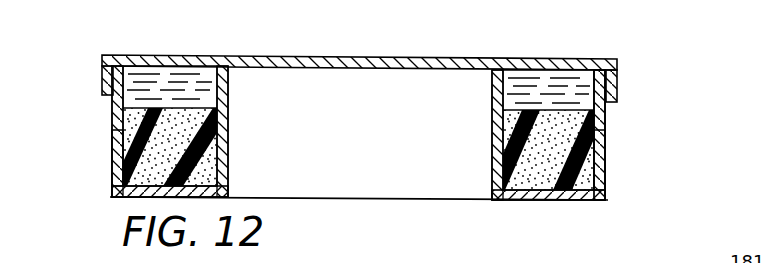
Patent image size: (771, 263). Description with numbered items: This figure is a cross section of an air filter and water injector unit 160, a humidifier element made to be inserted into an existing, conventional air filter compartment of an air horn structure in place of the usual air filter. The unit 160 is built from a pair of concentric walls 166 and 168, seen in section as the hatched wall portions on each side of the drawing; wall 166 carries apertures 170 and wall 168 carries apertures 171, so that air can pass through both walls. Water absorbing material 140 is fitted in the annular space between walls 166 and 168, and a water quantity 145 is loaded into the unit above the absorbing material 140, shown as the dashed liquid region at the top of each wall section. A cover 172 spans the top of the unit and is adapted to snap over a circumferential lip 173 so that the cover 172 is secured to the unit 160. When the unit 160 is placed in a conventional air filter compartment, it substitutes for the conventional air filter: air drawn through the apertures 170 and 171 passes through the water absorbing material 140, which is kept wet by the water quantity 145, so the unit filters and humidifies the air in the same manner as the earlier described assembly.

The water absorbing material 140 is at (130, 192).
The water quantity 145 is at (172, 78).
The air filter and water injector unit 160 is at (585, 204).
The outer concentric wall 166 is at (607, 112).
The inner concentric wall 168 is at (231, 86).
The apertures 170 is at (112, 145).
The apertures 171 is at (230, 122).
The cover 172 is at (358, 64).
The circumferential lip 173 is at (110, 78).